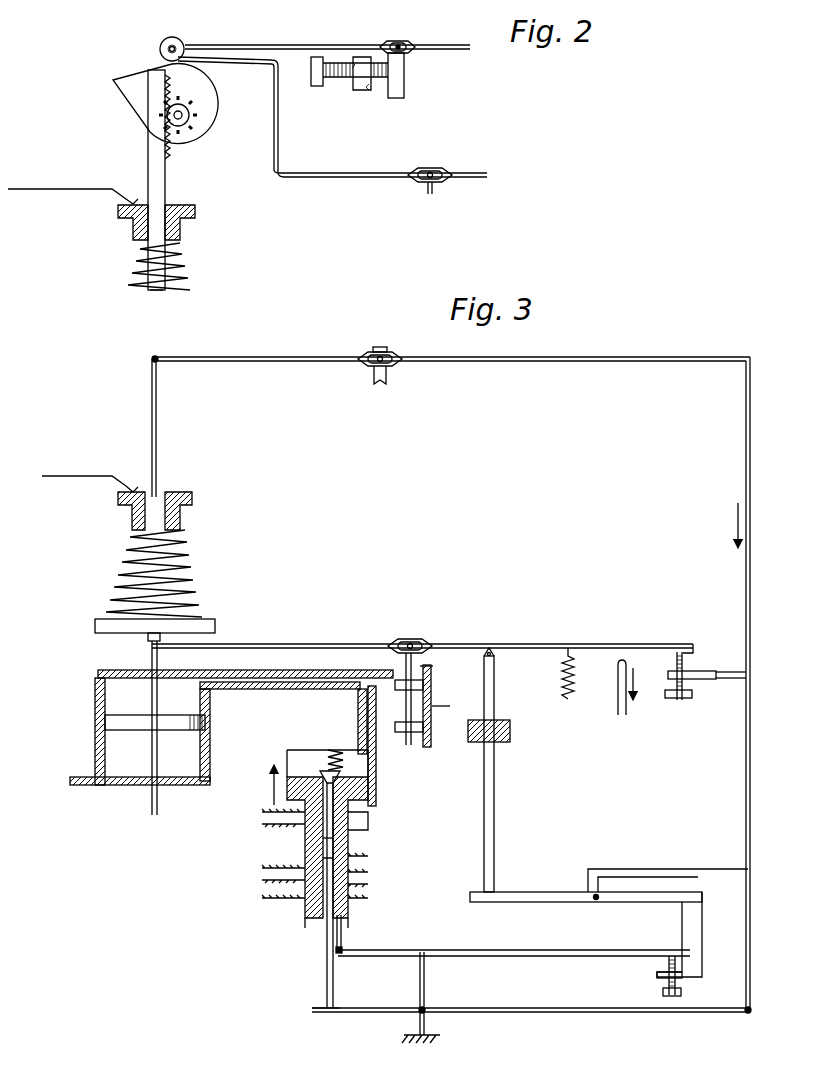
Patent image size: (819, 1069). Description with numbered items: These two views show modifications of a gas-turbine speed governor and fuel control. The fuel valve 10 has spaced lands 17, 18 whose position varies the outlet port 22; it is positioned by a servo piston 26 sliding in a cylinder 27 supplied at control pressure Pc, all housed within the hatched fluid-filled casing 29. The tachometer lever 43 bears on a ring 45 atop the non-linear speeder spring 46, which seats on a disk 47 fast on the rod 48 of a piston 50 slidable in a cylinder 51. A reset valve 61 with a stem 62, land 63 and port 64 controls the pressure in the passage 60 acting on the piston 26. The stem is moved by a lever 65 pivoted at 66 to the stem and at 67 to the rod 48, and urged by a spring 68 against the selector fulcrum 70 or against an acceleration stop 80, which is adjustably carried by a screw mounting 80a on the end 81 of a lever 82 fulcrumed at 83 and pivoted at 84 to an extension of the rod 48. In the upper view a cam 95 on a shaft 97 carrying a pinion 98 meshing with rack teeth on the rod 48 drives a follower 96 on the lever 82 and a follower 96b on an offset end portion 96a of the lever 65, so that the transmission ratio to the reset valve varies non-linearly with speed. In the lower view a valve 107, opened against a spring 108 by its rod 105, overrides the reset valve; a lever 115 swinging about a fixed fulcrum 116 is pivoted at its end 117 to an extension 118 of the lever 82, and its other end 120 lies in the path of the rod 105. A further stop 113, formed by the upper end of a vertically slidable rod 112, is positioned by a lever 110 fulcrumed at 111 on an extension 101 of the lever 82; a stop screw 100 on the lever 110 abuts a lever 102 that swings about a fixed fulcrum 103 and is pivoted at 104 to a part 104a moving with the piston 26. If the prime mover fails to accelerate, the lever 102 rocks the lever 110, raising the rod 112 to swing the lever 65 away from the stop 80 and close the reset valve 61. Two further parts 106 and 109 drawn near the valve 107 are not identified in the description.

In FIG. 3, the fuel valve 10 is at (298, 906).
In FIG. 3, the land 17 is at (305, 838).
In FIG. 3, the land 18 is at (348, 906).
In FIG. 3, the outlet port 22 is at (350, 874).
In FIG. 3, the piston 26 is at (370, 790).
In FIG. 3, the cylinder 27 is at (366, 820).
In FIG. 3, the casing 29 is at (512, 737).
In FIG. 2, the lever 43 is at (56, 189).
In FIG. 3, the lever 43 is at (74, 475).
In FIG. 2, the ring 45 is at (133, 232).
In FIG. 3, the ring 45 is at (132, 522).
In FIG. 2, the speeder spring 46 is at (185, 268).
In FIG. 3, the speeder spring 46 is at (125, 573).
In FIG. 3, the disk 47 is at (212, 626).
In FIG. 2, the rod 48 is at (150, 288).
In FIG. 3, the piston 50 is at (107, 721).
In FIG. 3, the cylinder 51 is at (98, 752).
In FIG. 3, the passage 60 is at (262, 686).
In FIG. 3, the reset valve 61 is at (434, 728).
In FIG. 3, the stem 62 is at (404, 662).
In FIG. 3, the land 63 is at (424, 686).
In FIG. 3, the port 64 is at (402, 692).
In FIG. 2, the lever 65 is at (320, 178).
In FIG. 3, the lever 65 is at (462, 631).
In FIG. 2, the pivotal connection 66 is at (440, 185).
In FIG. 3, the pivotal connection 66 is at (404, 641).
In FIG. 3, the pivotal connection 67 is at (152, 647).
In FIG. 3, the spring 68 is at (548, 685).
In FIG. 3, the fulcrum 70 is at (608, 687).
In FIG. 3, the stop 80 is at (690, 656).
In FIG. 3, the screw mounting 80a is at (680, 700).
In FIG. 3, the end of lever 81 is at (727, 681).
In FIG. 2, the lever 82 is at (306, 38).
In FIG. 3, the lever 82 is at (524, 364).
In FIG. 2, the fulcrum 83 is at (412, 52).
In FIG. 3, the fulcrum 83 is at (370, 367).
In FIG. 3, the pivotal connection 84 is at (158, 357).
In FIG. 2, the cam 95 is at (214, 92).
In FIG. 2, the follower 96 is at (182, 41).
In FIG. 2, the offset end portion 96a is at (282, 135).
In FIG. 2, the follower 96b is at (160, 46).
In FIG. 2, the shaft 97 is at (186, 116).
In FIG. 2, the pinion 98 is at (186, 134).
In FIG. 3, the stop screw 100 is at (666, 966).
In FIG. 3, the extension 101 is at (697, 875).
In FIG. 3, the lever 102 is at (514, 946).
In FIG. 3, the fixed fulcrum 103 is at (428, 946).
In FIG. 3, the pivotal connection 104 is at (328, 955).
In FIG. 3, the part 104a is at (343, 946).
In FIG. 3, the valve rod 105 is at (335, 860).
In FIG. 3, the valve seat 106 is at (340, 840).
In FIG. 3, the valve 107 is at (322, 772).
In FIG. 3, the spring 108 is at (336, 760).
In FIG. 3, the valve head 109 is at (336, 782).
In FIG. 3, the lever 110 is at (534, 885).
In FIG. 3, the fulcrum 111 is at (597, 899).
In FIG. 3, the rod 112 is at (496, 795).
In FIG. 3, the stop 113 is at (494, 658).
In FIG. 3, the lever 115 is at (588, 1013).
In FIG. 3, the fixed fulcrum 116 is at (420, 1008).
In FIG. 3, the end of lever 117 is at (750, 1014).
In FIG. 3, the extension 118 is at (746, 962).
In FIG. 3, the end of lever 120 is at (325, 1014).